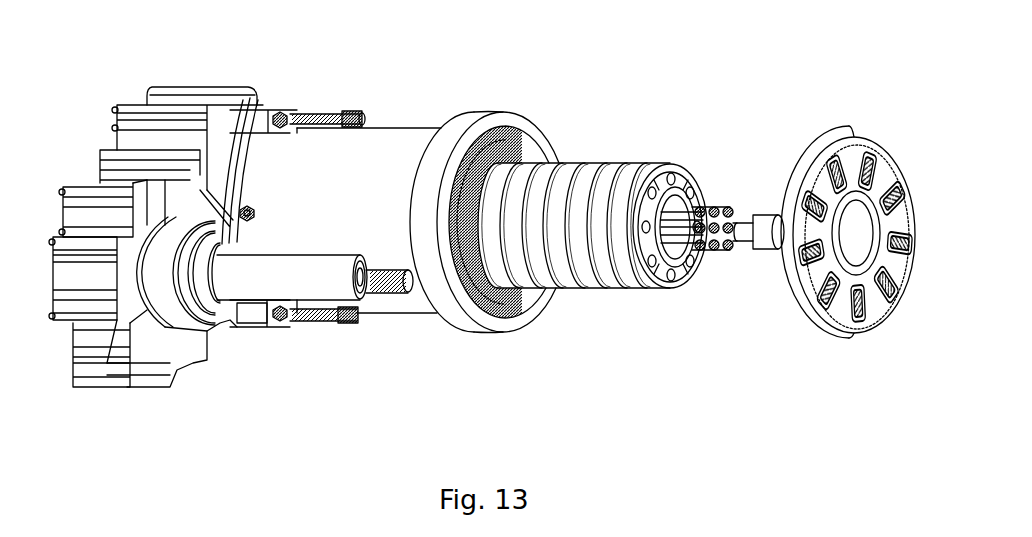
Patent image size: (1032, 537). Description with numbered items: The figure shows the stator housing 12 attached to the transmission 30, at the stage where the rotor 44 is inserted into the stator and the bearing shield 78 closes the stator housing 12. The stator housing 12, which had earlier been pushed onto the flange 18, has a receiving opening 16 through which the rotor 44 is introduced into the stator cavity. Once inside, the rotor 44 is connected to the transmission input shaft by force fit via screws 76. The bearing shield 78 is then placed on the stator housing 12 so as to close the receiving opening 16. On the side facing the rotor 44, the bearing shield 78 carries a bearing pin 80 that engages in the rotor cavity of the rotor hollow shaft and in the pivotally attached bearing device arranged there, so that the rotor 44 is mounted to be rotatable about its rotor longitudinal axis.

The stator housing 12 is at (398, 128).
The receiving opening 16 is at (525, 142).
The flange 18 is at (271, 140).
The transmission 30 is at (195, 130).
The rotor 44 is at (593, 178).
The screws 76 is at (711, 252).
The bearing shield 78 is at (822, 142).
The bearing pin 80 is at (762, 220).